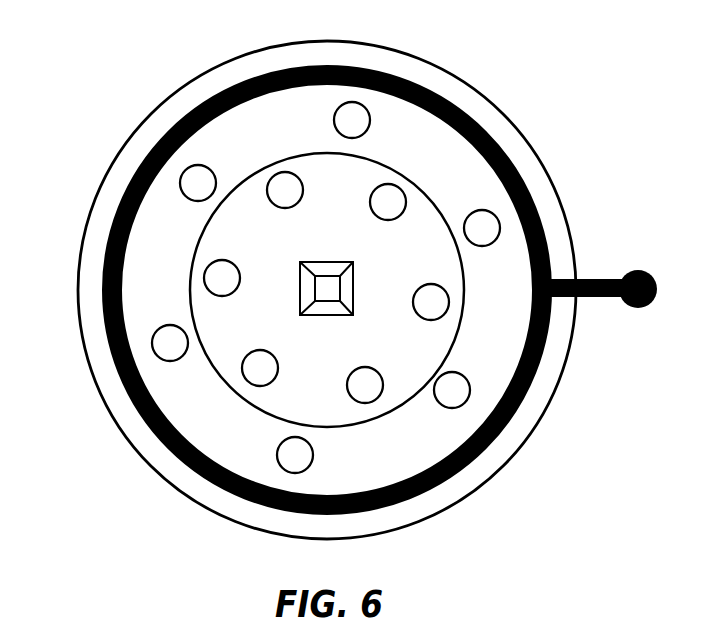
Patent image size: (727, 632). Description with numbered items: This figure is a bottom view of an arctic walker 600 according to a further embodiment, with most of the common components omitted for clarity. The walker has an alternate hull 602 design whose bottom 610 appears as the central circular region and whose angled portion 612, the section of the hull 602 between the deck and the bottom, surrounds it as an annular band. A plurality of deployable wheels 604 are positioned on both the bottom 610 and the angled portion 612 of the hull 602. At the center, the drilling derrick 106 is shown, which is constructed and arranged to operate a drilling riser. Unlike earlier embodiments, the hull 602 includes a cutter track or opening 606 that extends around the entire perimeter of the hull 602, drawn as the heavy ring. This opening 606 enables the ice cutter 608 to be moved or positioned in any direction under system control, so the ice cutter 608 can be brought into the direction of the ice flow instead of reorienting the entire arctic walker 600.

The arctic walker 600 is at (118, 50).
The hull 602 is at (432, 78).
The deployable wheels 604 is at (163, 327).
The cutter track or opening 606 is at (489, 133).
The ice cutter 608 is at (643, 270).
The bottom 610 is at (298, 387).
The angled portion 612 is at (395, 460).
The drilling derrick 106 is at (337, 262).